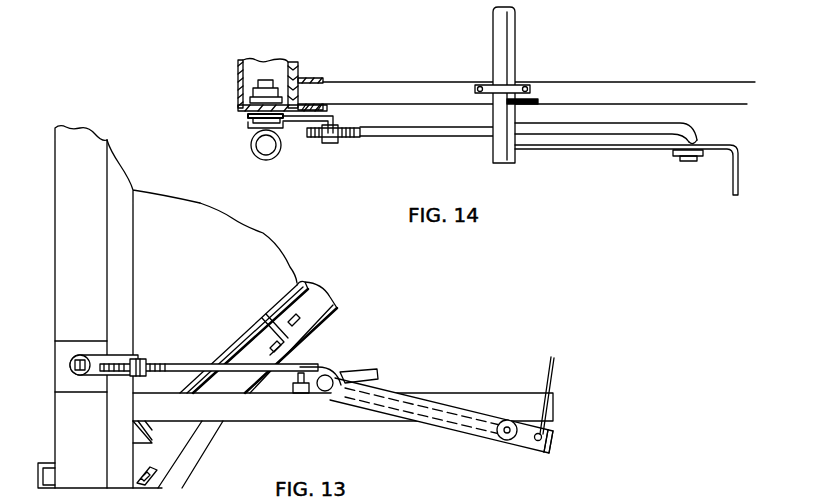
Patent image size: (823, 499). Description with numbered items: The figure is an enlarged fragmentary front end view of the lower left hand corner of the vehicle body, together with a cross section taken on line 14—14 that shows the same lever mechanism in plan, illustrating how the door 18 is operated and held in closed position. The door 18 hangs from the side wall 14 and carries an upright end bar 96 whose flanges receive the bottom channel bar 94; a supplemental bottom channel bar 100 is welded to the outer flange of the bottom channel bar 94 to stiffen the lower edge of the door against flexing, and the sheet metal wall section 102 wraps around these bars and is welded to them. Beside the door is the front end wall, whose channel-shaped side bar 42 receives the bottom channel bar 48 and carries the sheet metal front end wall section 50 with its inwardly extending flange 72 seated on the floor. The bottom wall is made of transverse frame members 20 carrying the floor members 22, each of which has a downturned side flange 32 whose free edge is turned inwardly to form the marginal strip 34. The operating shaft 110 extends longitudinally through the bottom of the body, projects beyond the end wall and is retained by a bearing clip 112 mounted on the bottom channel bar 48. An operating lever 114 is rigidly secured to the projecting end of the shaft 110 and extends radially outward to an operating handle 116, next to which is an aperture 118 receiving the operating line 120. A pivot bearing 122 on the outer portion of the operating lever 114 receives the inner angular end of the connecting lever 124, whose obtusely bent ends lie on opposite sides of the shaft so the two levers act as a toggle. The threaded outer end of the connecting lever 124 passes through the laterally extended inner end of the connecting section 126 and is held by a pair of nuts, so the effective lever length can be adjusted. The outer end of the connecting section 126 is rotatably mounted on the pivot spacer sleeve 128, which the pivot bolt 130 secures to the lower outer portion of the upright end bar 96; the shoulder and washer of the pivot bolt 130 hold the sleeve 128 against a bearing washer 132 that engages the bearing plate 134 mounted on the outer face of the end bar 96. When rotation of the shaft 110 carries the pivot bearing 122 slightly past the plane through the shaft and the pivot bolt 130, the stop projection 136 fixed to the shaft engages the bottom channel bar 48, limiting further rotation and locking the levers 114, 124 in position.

In FIG. 13, the side walls 14 is at (46, 350).
In FIG. 14, the door 18 is at (229, 78).
In FIG. 13, the door 18 is at (60, 224).
In FIG. 13, the transverse frame member 20 is at (202, 457).
In FIG. 13, the floor member 22 is at (232, 345).
In FIG. 13, the side flange 32 is at (309, 282).
In FIG. 13, the marginal strip 34 is at (328, 296).
In FIG. 14, the side bar 42 is at (318, 77).
In FIG. 13, the side bar 42 is at (127, 239).
In FIG. 14, the bottom channel bar 48 is at (432, 80).
In FIG. 13, the bottom channel bar 48 is at (483, 392).
In FIG. 13, the front end wall section 50 is at (248, 243).
In FIG. 13, the inwardly extending flange 72 is at (262, 317).
In FIG. 14, the bottom channel bar 94 is at (278, 72).
In FIG. 14, the upright end bar 96 is at (237, 93).
In FIG. 13, the upright end bar 96 is at (66, 172).
In FIG. 13, the supplemental bottom channel bar 100 is at (43, 462).
In FIG. 14, the sheet metal wall section 102 is at (300, 68).
In FIG. 14, the operating shaft 110 is at (509, 33).
In FIG. 13, the operating shaft 110 is at (331, 380).
In FIG. 14, the bearing clip 112 is at (513, 88).
In FIG. 13, the bearing clip 112 is at (305, 373).
In FIG. 14, the operating lever 114 is at (606, 132).
In FIG. 13, the operating lever 114 is at (465, 423).
In FIG. 14, the operating handle 116 is at (626, 170).
In FIG. 13, the operating handle 116 is at (553, 444).
In FIG. 14, the aperture 118 is at (688, 155).
In FIG. 13, the aperture 118 is at (537, 442).
In FIG. 13, the operating line 120 is at (553, 375).
In FIG. 14, the pivot bearing 122 is at (698, 140).
In FIG. 13, the pivot bearing 122 is at (503, 441).
In FIG. 14, the connecting lever 124 is at (430, 132).
In FIG. 13, the connecting lever 124 is at (183, 363).
In FIG. 14, the connecting section 126 is at (297, 119).
In FIG. 13, the connecting section 126 is at (97, 373).
In FIG. 14, the pivot spacer sleeve 128 is at (248, 126).
In FIG. 14, the pivot bolt 130 is at (266, 161).
In FIG. 13, the pivot bolt 130 is at (69, 366).
In FIG. 14, the bearing washer 132 is at (248, 118).
In FIG. 14, the bearing plate 134 is at (245, 112).
In FIG. 13, the bearing plate 134 is at (68, 343).
In FIG. 14, the stop projection 136 is at (535, 104).
In FIG. 13, the stop projection 136 is at (374, 372).